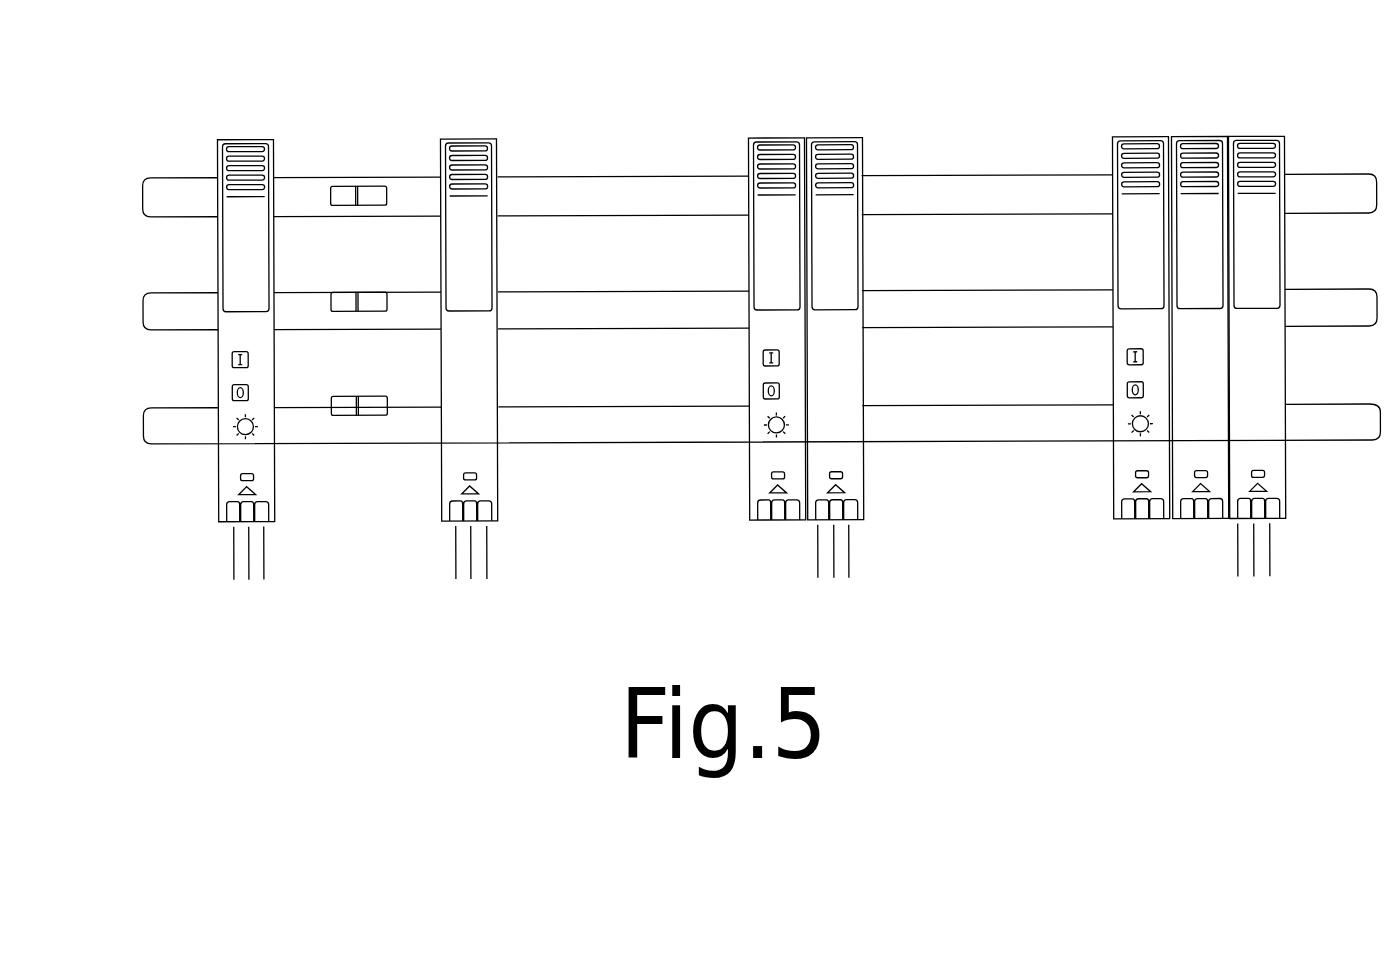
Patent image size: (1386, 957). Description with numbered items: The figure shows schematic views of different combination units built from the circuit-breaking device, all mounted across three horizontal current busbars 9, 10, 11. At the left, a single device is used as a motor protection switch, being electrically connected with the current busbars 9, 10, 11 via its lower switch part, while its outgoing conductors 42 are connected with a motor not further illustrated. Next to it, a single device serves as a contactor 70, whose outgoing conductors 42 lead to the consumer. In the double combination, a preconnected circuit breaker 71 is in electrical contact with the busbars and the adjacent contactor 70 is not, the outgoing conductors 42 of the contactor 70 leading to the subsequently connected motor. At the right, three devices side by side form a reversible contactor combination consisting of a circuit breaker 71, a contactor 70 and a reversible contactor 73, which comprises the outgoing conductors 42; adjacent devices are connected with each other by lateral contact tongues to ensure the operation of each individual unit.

The current busbar 9 is at (177, 196).
The current busbar 10 is at (160, 314).
The current busbar 11 is at (159, 425).
The contactor 70 is at (470, 138).
The circuit breaker 71 is at (251, 139).
The reversible contactor 73 is at (1253, 137).
The outgoing conductors 42 is at (264, 556).